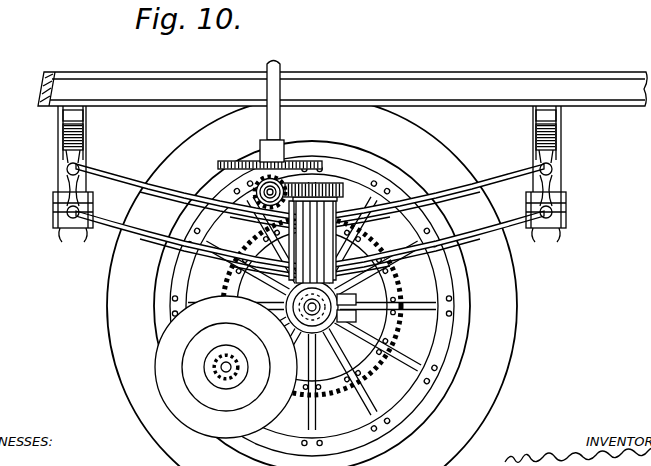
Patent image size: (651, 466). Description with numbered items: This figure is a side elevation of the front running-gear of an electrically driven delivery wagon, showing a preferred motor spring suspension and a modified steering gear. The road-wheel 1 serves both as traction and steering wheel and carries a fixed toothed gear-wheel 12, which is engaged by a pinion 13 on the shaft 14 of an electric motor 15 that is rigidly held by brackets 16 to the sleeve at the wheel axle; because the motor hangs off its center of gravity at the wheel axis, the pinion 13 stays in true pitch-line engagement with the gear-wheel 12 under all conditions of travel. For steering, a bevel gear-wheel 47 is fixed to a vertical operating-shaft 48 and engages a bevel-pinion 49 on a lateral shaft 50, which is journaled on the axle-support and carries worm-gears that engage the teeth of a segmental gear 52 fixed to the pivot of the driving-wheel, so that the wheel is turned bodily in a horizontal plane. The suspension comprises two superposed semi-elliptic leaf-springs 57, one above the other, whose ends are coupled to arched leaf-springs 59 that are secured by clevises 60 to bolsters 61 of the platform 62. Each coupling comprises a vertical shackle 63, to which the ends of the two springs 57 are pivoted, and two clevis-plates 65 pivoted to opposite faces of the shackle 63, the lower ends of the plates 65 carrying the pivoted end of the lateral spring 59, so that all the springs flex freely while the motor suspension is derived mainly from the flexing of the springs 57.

The road-wheel 1 is at (422, 140).
The toothed gear-wheel 12 is at (396, 348).
The pinion 13 is at (220, 357).
The shaft 14 is at (225, 370).
The motor 15 is at (157, 380).
The brackets 16 is at (290, 307).
The bevel gear-wheel 47 is at (303, 173).
The vertical operating-shaft 48 is at (267, 127).
The bevel-pinion 49 is at (220, 166).
The lateral shaft 50 is at (262, 208).
The segmental gear 52 is at (341, 175).
The leaf-springs 57 is at (177, 247).
The arched leaf-spring 59 is at (80, 150).
The clevis 60 is at (58, 137).
The bolster 61 is at (78, 115).
The platform 62 is at (373, 86).
The vertical shackle 63 is at (68, 182).
The clevis-plates 65 is at (61, 236).